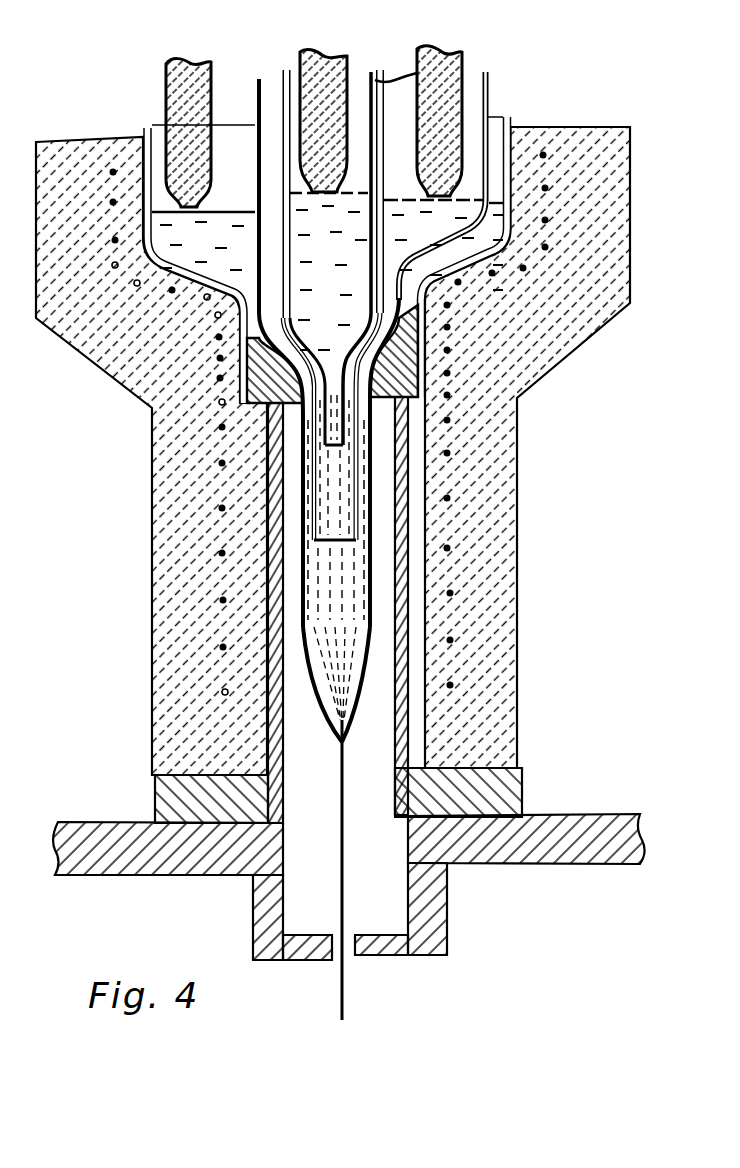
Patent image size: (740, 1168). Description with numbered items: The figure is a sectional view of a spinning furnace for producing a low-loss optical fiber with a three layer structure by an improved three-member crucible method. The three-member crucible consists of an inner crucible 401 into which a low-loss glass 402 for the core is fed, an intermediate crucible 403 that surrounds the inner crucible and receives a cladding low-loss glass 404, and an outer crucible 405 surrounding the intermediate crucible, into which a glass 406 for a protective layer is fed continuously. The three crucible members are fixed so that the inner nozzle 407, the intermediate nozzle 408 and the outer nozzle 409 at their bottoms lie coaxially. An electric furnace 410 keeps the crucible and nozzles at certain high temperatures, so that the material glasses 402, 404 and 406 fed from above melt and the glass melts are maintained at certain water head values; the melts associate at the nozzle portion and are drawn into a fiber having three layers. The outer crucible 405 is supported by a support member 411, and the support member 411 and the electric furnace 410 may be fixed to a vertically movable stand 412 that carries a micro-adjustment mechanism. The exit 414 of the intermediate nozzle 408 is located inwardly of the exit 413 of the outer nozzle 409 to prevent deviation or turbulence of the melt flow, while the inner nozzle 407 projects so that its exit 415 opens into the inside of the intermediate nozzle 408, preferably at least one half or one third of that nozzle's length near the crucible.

The inner crucible 401 is at (375, 79).
The low-loss glass for a core 402 is at (340, 58).
The intermediate crucible 403 is at (488, 86).
The cladding low-loss glass 404 is at (460, 60).
The outer crucible 405 is at (143, 128).
The glass for a protective layer 406 is at (204, 70).
The inner nozzle 407 is at (322, 427).
The intermediate nozzle 408 is at (313, 510).
The outer nozzle 409 is at (303, 605).
The electric furnace 410 is at (577, 328).
The support member 411 is at (513, 780).
The vertically movable stand 412 is at (620, 817).
The exit of the outer nozzle 413 is at (345, 630).
The exit of the intermediate nozzle 414 is at (337, 541).
The exit of the inner nozzle 415 is at (330, 445).